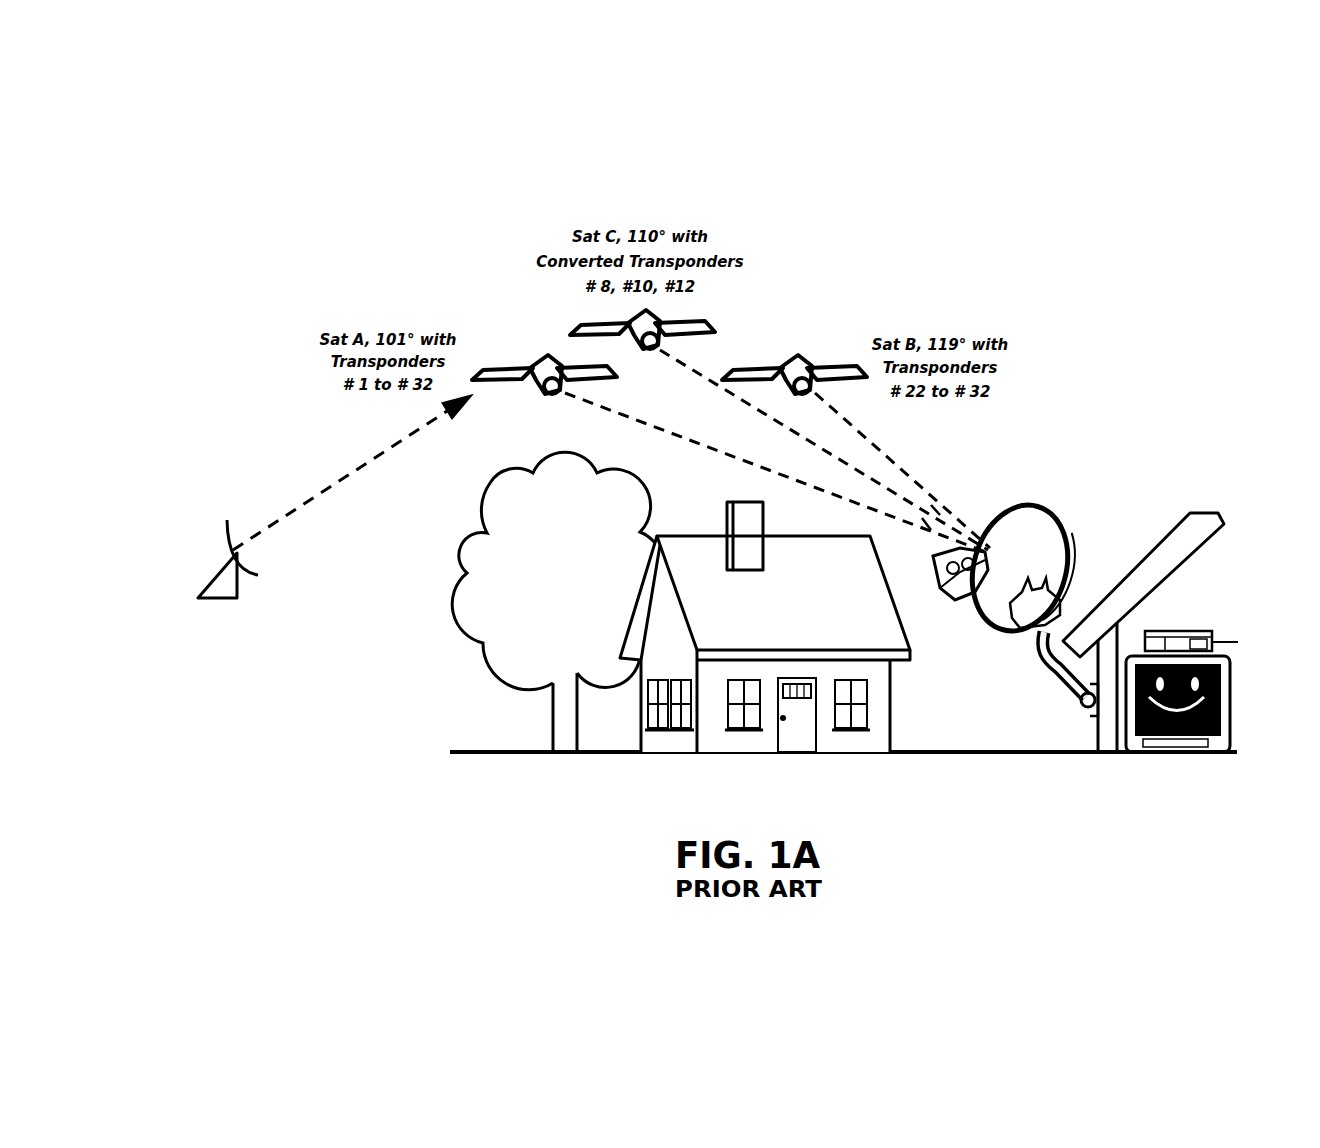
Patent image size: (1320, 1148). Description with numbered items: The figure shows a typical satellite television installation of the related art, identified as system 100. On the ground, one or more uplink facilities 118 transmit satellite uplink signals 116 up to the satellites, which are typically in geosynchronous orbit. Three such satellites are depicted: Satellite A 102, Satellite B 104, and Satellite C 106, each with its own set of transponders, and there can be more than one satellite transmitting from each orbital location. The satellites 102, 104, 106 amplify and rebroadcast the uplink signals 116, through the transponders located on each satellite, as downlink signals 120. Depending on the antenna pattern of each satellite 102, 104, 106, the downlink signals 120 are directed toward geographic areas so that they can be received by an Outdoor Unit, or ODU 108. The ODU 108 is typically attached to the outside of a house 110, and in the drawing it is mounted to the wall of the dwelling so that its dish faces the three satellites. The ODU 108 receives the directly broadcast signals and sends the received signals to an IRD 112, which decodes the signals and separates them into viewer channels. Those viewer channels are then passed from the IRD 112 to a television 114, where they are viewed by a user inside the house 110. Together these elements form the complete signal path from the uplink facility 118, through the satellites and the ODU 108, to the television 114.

The system 100 is at (752, 162).
The Satellite A 102 is at (541, 352).
The Satellite B 104 is at (815, 357).
The Satellite C 106 is at (683, 318).
The Outdoor Unit (ODU) 108 is at (1038, 505).
The house 110 is at (1168, 557).
The IRD 112 is at (1178, 630).
The television 114 is at (1232, 693).
The satellite uplink signals 116 is at (356, 472).
The uplink facility 118 is at (212, 575).
The downlink signals 120 is at (930, 484).